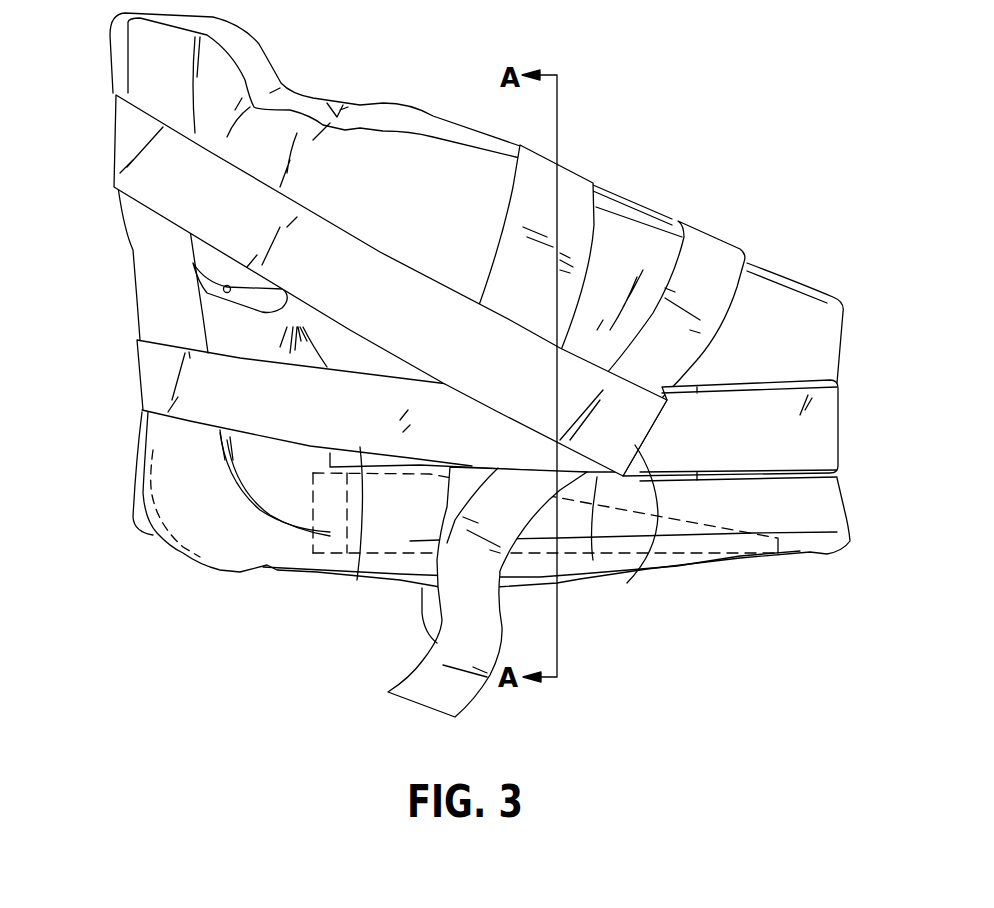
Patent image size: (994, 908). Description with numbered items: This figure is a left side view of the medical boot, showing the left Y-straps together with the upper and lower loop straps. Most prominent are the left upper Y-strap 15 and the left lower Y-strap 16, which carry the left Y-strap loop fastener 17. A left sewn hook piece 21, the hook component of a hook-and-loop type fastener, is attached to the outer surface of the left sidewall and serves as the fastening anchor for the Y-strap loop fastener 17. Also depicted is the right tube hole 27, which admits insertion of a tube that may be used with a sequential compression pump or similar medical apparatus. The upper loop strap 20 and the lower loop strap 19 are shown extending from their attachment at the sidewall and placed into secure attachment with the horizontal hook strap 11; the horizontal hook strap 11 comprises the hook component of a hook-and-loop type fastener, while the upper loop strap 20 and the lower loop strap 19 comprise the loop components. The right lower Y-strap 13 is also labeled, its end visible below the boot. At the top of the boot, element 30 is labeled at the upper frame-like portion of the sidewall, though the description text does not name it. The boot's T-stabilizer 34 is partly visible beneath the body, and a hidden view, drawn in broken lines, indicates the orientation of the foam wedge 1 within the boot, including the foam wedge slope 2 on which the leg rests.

The foam wedge 1 is at (313, 493).
The headrest frame 30 is at (110, 48).
The right tube hole 27 is at (227, 287).
The left lower Y-strap 16 is at (297, 413).
The lower loop strap 19 is at (707, 230).
The left sewn hook piece 21 is at (827, 390).
The left Y-strap loop fastener 17 is at (757, 447).
The upper loop strap 20 is at (547, 165).
The left upper Y-strap 15 is at (335, 255).
The T-stabilizer 34 is at (432, 603).
The horizontal hook strap 11 is at (357, 580).
The right lower Y-strap 13 is at (657, 549).
The foam wedge slope 2 is at (627, 583).